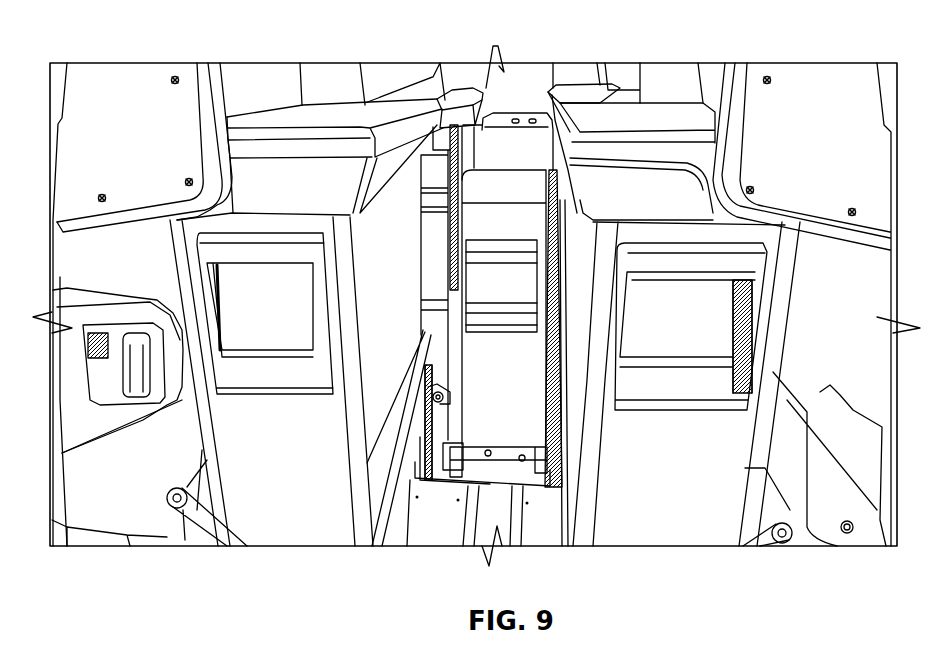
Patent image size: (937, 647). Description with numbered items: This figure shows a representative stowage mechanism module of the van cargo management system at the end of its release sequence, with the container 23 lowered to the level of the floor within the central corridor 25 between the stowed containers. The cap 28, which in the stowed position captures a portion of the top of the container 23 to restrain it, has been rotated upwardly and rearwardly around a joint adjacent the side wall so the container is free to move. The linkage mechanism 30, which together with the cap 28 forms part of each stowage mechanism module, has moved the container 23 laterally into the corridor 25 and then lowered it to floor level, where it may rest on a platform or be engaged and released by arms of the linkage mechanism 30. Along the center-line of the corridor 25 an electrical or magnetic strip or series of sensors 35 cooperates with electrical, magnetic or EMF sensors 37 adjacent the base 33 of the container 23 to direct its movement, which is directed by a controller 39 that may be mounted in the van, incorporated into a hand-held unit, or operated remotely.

The container 23 is at (485, 348).
The central corridor 25 is at (423, 530).
The cap 28 is at (445, 75).
The linkage mechanism 30 is at (447, 392).
The base 33 is at (450, 437).
The sensors 35 is at (513, 520).
The sensors 37 is at (487, 445).
The controller 39 is at (133, 333).